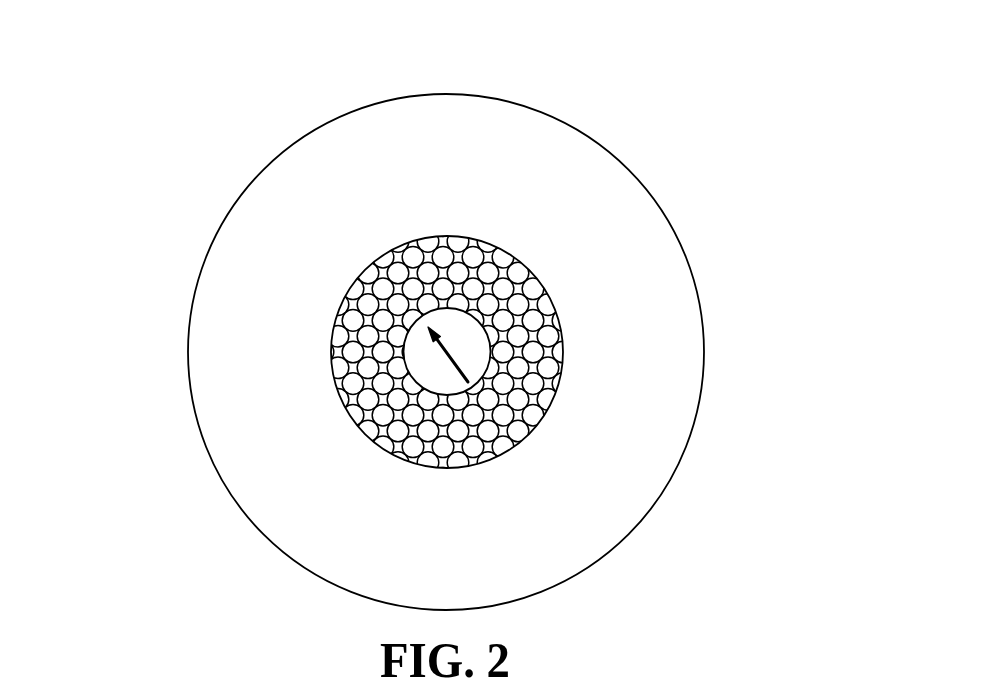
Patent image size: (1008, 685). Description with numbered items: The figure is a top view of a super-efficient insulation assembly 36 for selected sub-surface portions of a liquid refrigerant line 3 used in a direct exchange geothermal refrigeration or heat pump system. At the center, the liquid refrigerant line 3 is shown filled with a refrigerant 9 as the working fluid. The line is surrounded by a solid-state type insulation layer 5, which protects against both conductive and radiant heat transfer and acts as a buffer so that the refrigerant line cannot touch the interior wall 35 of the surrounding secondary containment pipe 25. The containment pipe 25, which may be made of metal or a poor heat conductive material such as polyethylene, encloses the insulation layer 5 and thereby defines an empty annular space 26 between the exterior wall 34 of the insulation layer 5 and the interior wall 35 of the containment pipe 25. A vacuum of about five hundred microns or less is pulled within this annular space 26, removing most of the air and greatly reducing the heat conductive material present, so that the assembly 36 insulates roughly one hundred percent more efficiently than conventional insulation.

The insulation assembly 36 is at (254, 145).
The refrigerant 9 is at (448, 348).
The liquid refrigerant line 3 is at (492, 329).
The insulation layer 5 is at (523, 353).
The exterior wall 34 is at (332, 352).
The interior wall 35 is at (219, 476).
The secondary containment pipe 25 is at (688, 442).
The annular space 26 is at (573, 502).